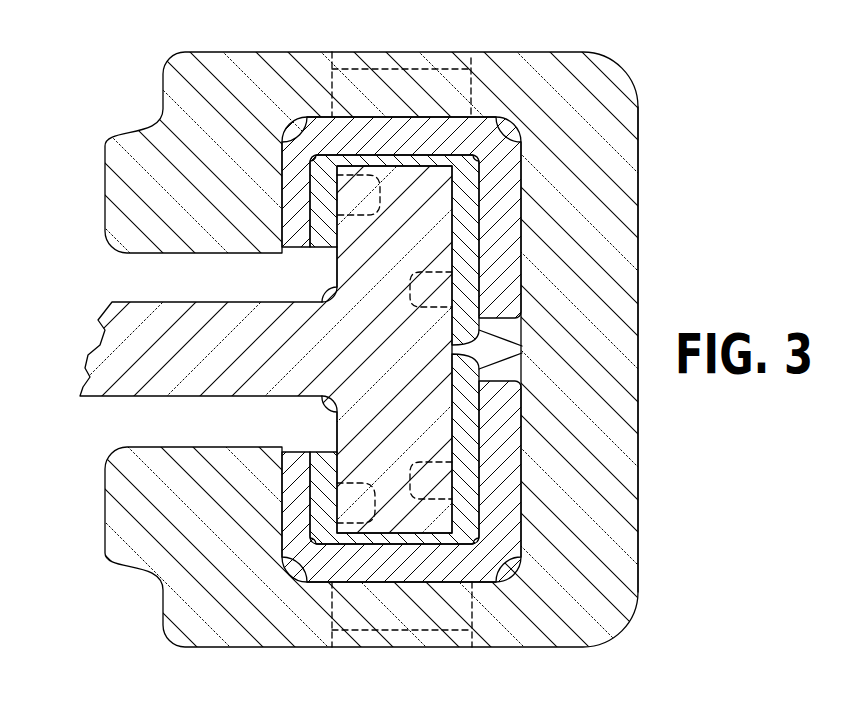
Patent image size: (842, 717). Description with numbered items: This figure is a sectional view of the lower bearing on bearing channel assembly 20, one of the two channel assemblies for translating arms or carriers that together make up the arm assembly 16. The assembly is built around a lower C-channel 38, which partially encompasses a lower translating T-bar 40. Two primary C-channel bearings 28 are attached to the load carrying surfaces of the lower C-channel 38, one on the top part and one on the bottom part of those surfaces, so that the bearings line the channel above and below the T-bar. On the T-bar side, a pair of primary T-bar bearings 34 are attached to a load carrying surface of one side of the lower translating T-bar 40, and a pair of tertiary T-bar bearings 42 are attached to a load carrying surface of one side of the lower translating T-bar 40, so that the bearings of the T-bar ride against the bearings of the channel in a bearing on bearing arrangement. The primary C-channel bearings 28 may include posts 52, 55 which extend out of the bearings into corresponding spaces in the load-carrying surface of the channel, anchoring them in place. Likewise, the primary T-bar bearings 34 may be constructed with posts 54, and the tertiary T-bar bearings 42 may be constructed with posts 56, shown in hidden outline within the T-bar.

The arm assembly 16 is at (88, 98).
The lower bearing on bearing channel assembly 20 is at (421, 358).
The primary C-channel bearing 28 is at (516, 238).
The primary T-bar bearing 34 is at (324, 268).
The lower C-channel 38 is at (640, 483).
The lower translating T-bar 40 is at (114, 399).
The tertiary T-bar bearing 42 is at (522, 347).
The post 52 is at (453, 68).
The post 54 is at (379, 218).
The post 55 is at (368, 0).
The post 56 is at (425, 308).